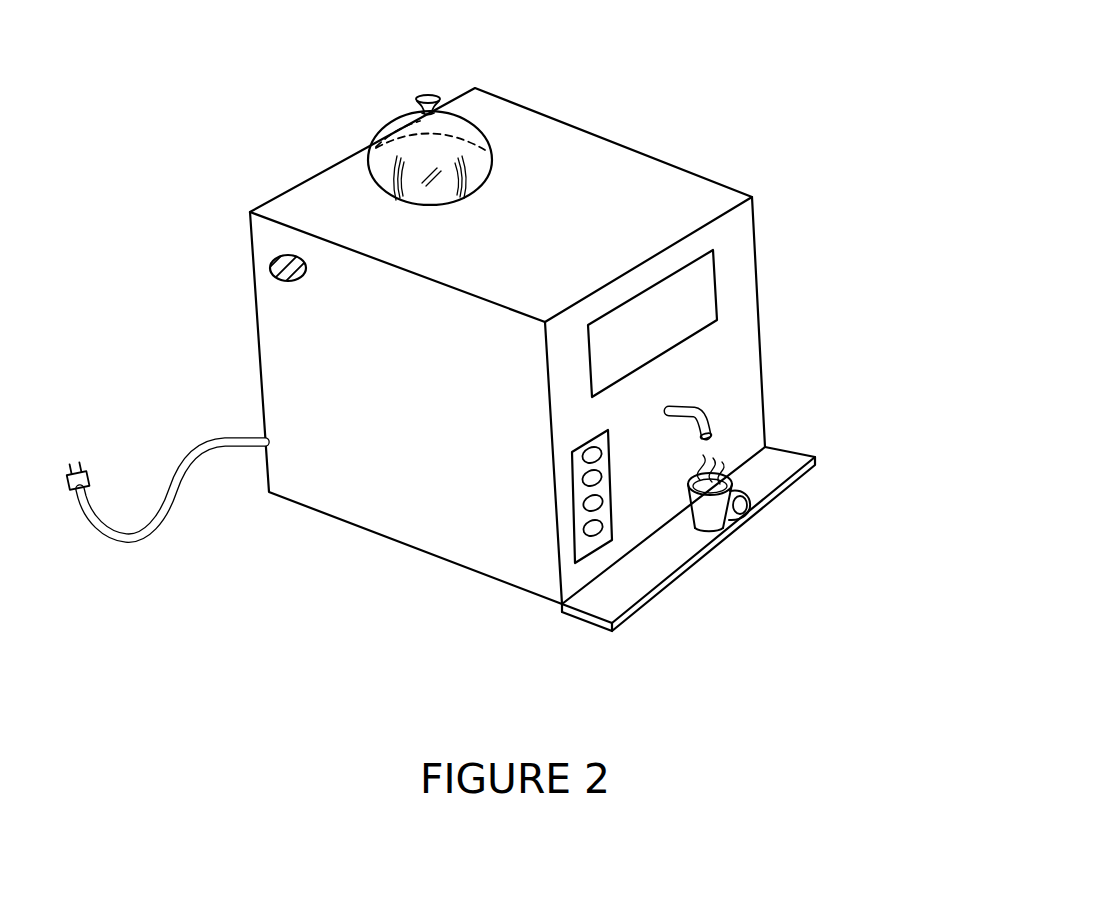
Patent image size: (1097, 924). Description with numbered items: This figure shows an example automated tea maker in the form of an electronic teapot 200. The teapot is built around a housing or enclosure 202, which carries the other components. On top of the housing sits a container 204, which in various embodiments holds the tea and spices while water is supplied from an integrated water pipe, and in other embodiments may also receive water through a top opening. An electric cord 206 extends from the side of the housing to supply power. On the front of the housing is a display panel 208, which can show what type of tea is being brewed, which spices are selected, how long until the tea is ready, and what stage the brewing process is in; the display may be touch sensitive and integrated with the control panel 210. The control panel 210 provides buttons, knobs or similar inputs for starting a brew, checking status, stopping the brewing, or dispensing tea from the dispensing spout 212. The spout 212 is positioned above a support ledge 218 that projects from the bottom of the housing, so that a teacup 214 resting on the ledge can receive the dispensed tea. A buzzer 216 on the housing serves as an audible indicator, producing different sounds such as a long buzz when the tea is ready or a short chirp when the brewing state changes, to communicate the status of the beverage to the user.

The electronic teapot 200 is at (690, 77).
The housing 202 is at (466, 572).
The container 204 is at (262, 162).
The electric cord 206 is at (197, 440).
The display panel 208 is at (717, 290).
The control panel 210 is at (573, 560).
The dispensing spout 212 is at (700, 408).
The teacup 214 is at (750, 484).
The buzzer 216 is at (270, 268).
The support ledge 218 is at (663, 562).